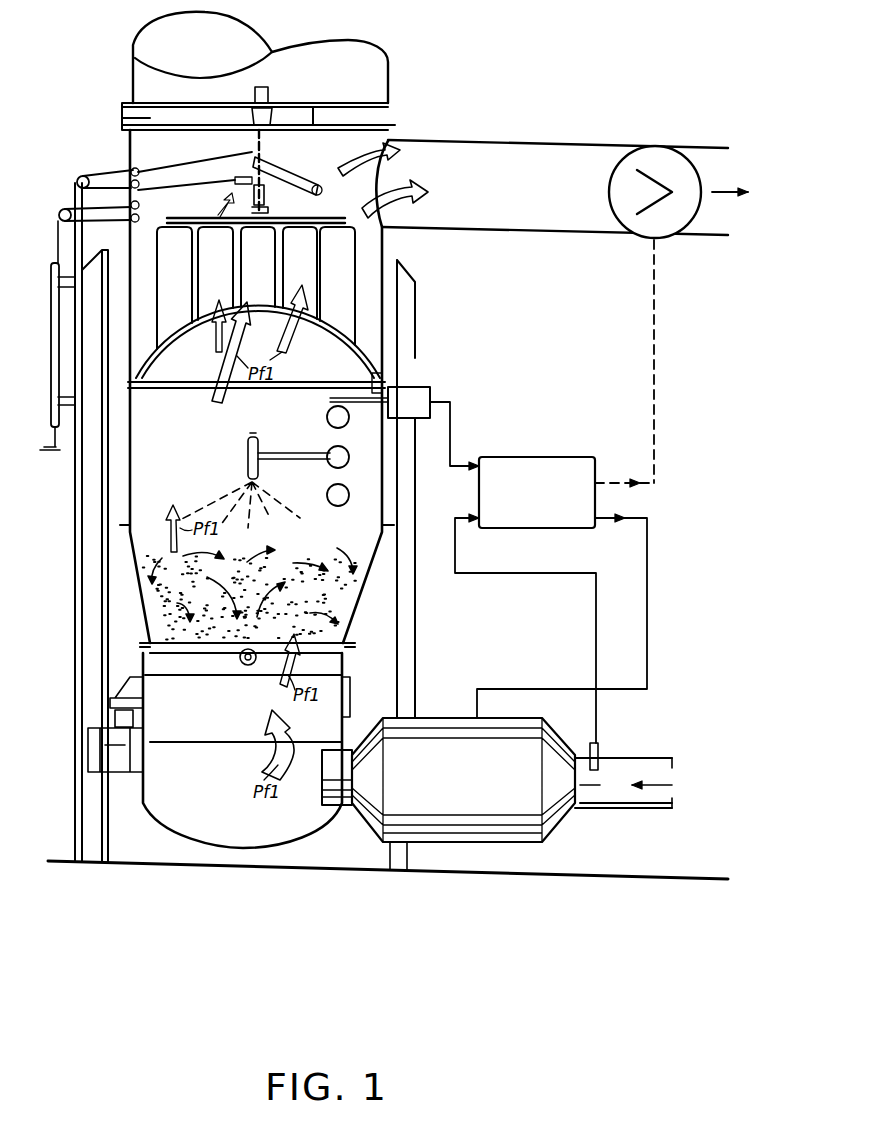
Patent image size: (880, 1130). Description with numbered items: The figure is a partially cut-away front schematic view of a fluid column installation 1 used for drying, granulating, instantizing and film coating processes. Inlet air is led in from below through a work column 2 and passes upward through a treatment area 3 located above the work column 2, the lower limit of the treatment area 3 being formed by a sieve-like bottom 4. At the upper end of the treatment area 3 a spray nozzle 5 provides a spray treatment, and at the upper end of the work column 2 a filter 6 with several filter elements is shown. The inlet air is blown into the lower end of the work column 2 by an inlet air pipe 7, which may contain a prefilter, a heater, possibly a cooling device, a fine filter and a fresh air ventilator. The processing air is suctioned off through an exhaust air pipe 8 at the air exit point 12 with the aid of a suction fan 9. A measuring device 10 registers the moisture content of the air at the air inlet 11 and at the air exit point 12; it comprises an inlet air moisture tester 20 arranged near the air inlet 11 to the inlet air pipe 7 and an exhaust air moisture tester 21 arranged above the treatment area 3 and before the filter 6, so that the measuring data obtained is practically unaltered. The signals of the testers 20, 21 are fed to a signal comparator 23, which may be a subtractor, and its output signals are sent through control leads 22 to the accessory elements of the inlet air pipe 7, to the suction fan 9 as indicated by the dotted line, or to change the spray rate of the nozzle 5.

The fluid column installation 1 is at (506, 96).
The work column 2 is at (133, 563).
The treatment area 3 is at (348, 530).
The sieve-like bottom 4 is at (203, 655).
The spray nozzle 5 is at (247, 460).
The filter 6 is at (362, 267).
The inlet air pipe 7 is at (450, 745).
The exhaust air pipe 8 is at (598, 140).
The suction fan 9 is at (657, 158).
The measuring device 10 is at (500, 585).
The air inlet 11 is at (616, 762).
The air exit point 12 is at (420, 157).
The inlet air moisture tester 20 is at (598, 748).
The exhaust air moisture tester 21 is at (420, 408).
The control leads 22 is at (654, 398).
The signal comparator 23 is at (581, 468).